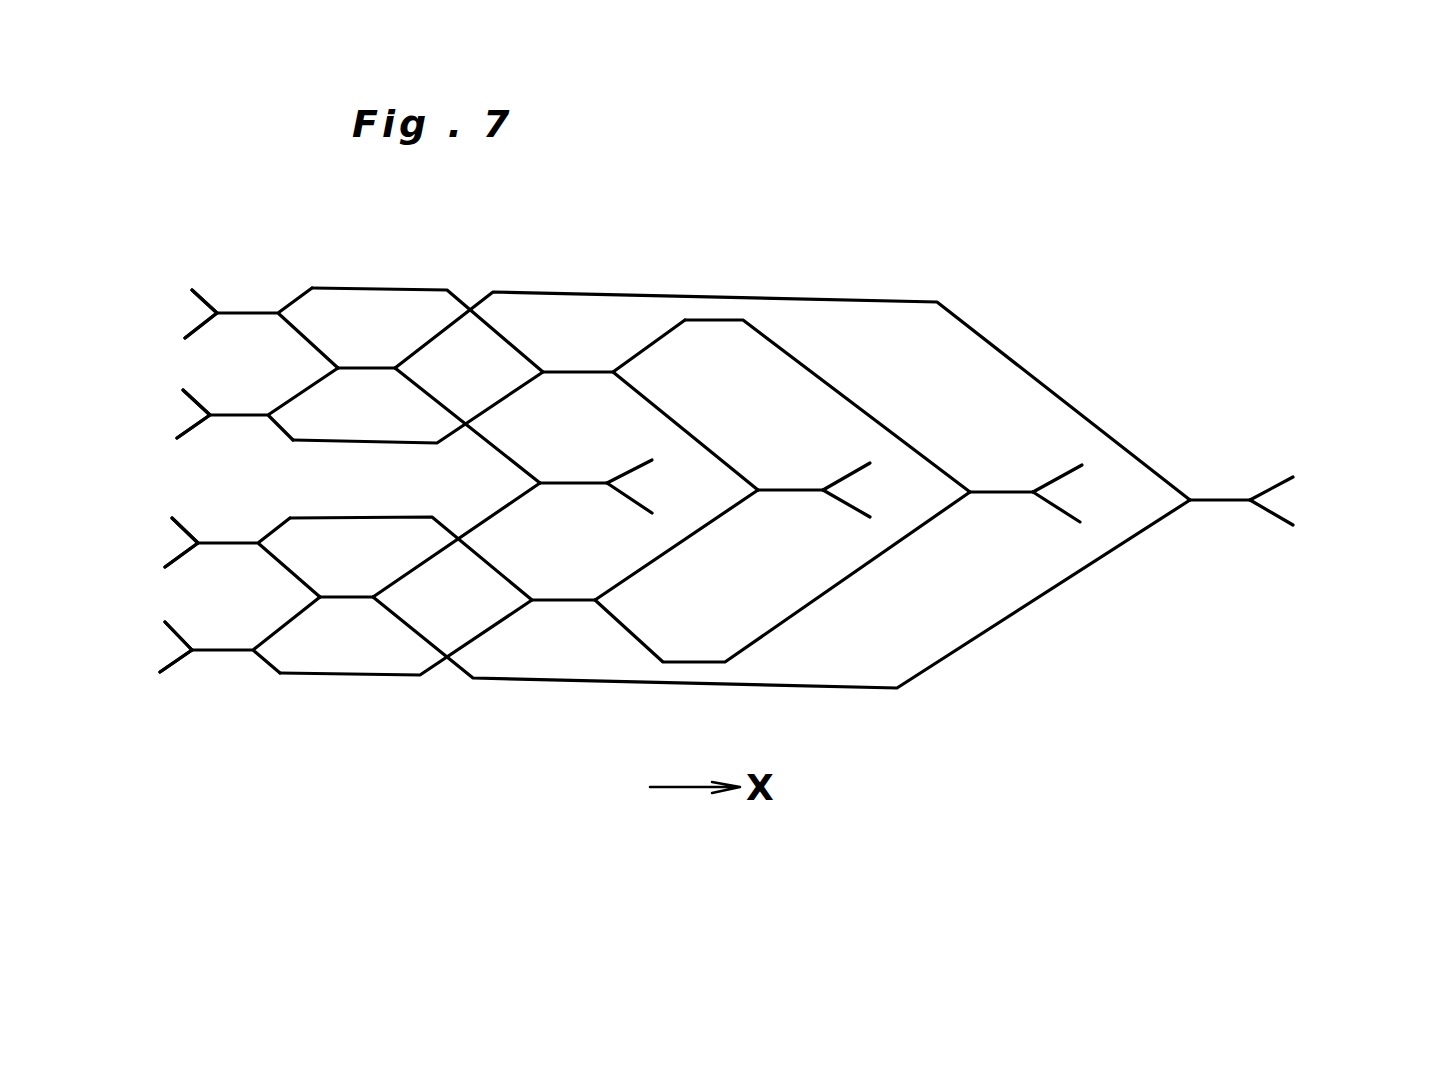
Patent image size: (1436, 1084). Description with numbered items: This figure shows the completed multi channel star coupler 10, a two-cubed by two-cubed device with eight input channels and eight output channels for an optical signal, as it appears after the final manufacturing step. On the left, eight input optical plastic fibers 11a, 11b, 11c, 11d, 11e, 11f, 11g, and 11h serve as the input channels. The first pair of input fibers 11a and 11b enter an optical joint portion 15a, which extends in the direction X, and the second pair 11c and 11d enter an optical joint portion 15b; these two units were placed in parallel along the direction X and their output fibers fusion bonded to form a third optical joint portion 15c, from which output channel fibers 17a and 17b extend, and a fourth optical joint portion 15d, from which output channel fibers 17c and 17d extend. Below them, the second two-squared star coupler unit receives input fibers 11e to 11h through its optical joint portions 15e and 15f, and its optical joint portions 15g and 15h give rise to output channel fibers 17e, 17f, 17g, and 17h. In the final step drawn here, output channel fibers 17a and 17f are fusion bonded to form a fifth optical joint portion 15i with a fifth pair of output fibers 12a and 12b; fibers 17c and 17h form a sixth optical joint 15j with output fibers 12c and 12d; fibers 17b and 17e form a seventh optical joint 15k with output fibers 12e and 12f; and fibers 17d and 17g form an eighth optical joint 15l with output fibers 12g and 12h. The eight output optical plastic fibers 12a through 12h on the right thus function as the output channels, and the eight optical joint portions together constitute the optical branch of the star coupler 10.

The multi channel star coupler 10 is at (1040, 232).
The input optical plastic fiber 11a is at (203, 300).
The input optical plastic fiber 11b is at (197, 325).
The input optical plastic fiber 11c is at (187, 397).
The input optical plastic fiber 11d is at (190, 430).
The input optical plastic fiber 11e is at (177, 525).
The input optical plastic fiber 11f is at (173, 558).
The input optical plastic fiber 11g is at (172, 630).
The input optical plastic fiber 11h is at (163, 663).
The output optical plastic fiber 12a is at (1063, 475).
The output optical plastic fiber 12b is at (1060, 515).
The output optical plastic fiber 12c is at (1290, 478).
The output optical plastic fiber 12d is at (1292, 523).
The output optical plastic fiber 12e is at (632, 472).
The output optical plastic fiber 12f is at (627, 503).
The output optical plastic fiber 12g is at (858, 478).
The output optical plastic fiber 12h is at (843, 510).
The optical joint portion 15a is at (243, 312).
The optical joint portion 15b is at (230, 413).
The third optical joint portion 15c is at (572, 370).
The fourth optical joint portion 15d is at (368, 368).
The optical joint portion 15e is at (222, 542).
The optical joint portion 15f is at (210, 648).
The optical joint portion 15g is at (563, 605).
The optical joint portion 15h is at (338, 595).
The fifth optical joint portion 15i is at (985, 490).
The sixth optical joint 15j is at (1197, 497).
The seventh optical joint 15k is at (553, 480).
The eighth optical joint 15l is at (775, 485).
The output channel fiber 17a is at (862, 407).
The output channel fiber 17b is at (692, 435).
The output channel fiber 17c is at (992, 342).
The output channel fiber 17d is at (473, 437).
The output channel fiber 17e is at (657, 560).
The output channel fiber 17f is at (882, 555).
The output channel fiber 17g is at (467, 530).
The output channel fiber 17h is at (1010, 613).